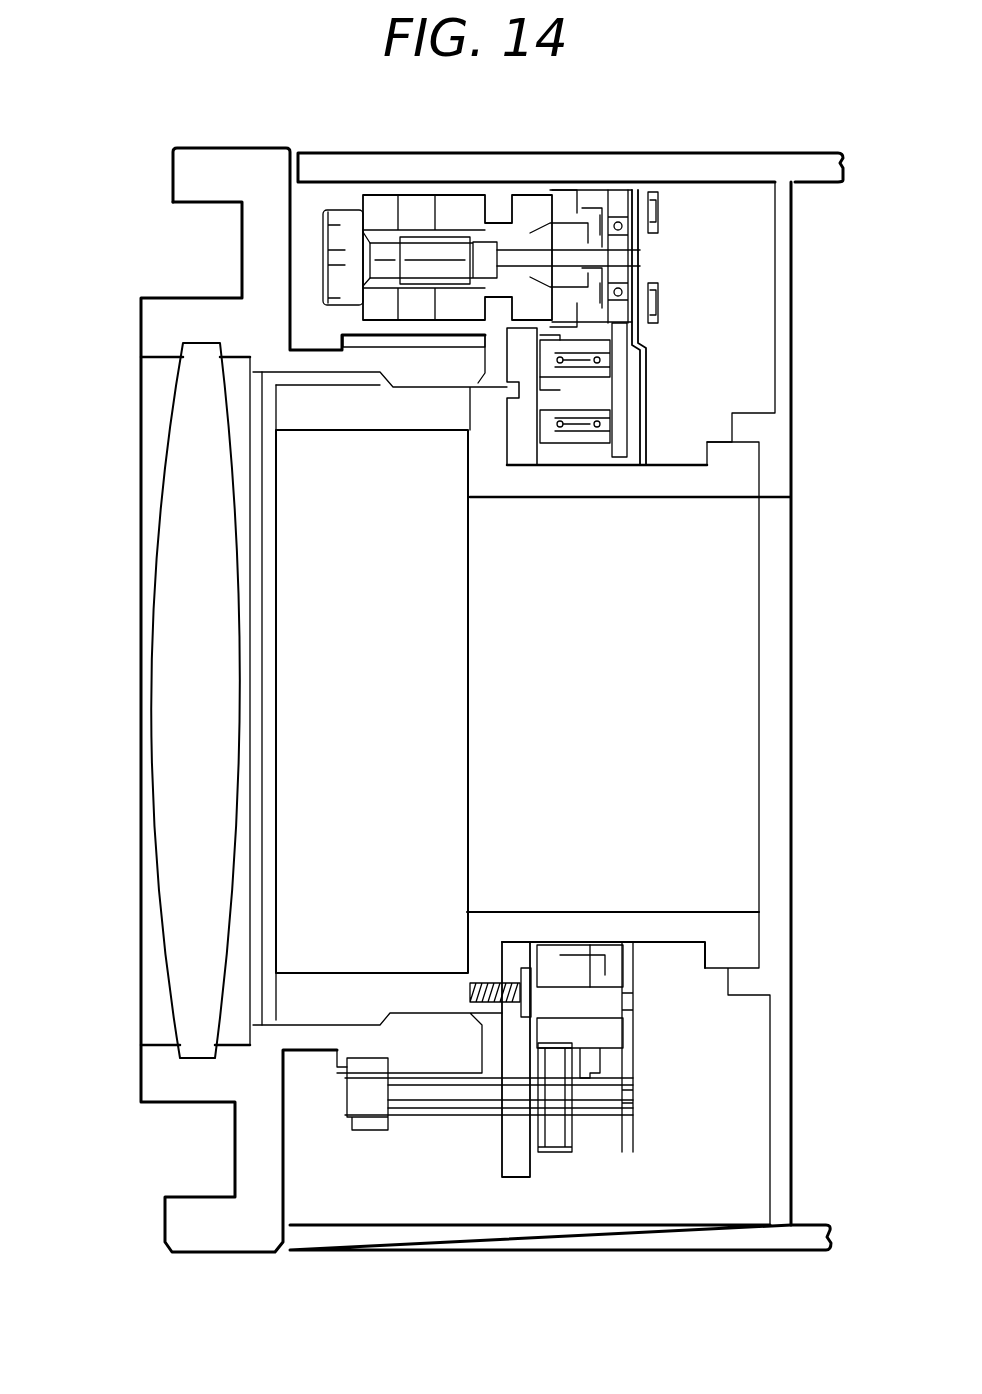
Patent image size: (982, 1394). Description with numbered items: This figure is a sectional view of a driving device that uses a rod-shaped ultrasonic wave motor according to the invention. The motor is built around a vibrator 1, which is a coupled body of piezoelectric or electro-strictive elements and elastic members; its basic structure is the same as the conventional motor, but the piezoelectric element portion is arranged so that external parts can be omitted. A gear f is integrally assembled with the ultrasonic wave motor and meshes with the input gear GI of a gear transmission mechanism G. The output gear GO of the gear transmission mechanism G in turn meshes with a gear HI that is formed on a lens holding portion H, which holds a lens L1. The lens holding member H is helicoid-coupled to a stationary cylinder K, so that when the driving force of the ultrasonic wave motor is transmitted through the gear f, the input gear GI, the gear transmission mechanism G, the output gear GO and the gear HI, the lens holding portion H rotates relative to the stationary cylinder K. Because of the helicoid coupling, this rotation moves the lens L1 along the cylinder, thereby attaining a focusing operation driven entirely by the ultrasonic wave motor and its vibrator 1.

The vibrator 1 is at (428, 205).
The gear f is at (624, 205).
The gear transmission mechanism G is at (647, 383).
The input gear GI is at (644, 428).
The lens L1 is at (167, 876).
The stationary cylinder K is at (340, 985).
The gear HI is at (337, 1065).
The output gear GO is at (371, 1130).
The lens holding portion H is at (200, 1240).